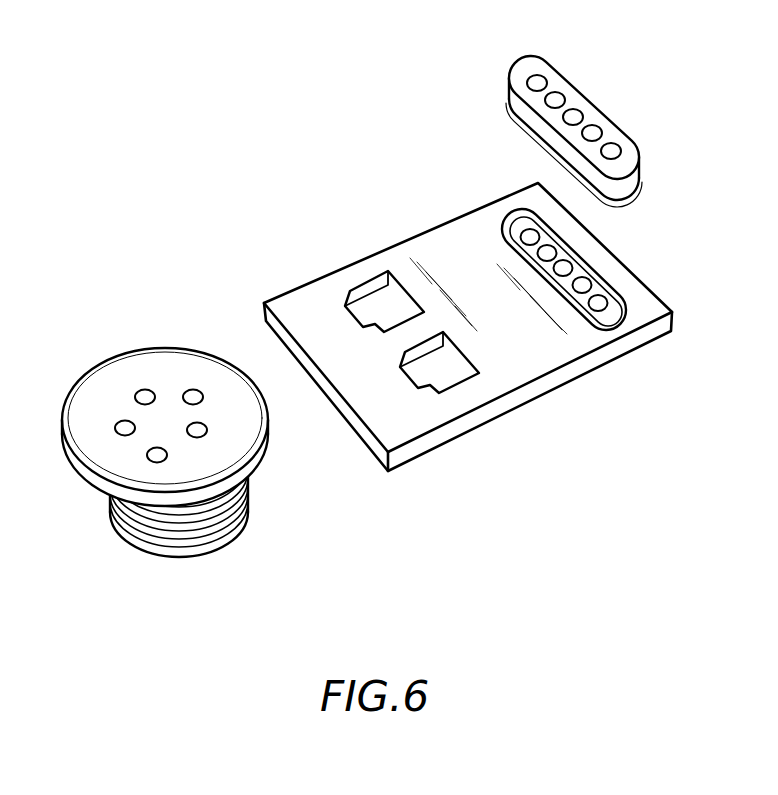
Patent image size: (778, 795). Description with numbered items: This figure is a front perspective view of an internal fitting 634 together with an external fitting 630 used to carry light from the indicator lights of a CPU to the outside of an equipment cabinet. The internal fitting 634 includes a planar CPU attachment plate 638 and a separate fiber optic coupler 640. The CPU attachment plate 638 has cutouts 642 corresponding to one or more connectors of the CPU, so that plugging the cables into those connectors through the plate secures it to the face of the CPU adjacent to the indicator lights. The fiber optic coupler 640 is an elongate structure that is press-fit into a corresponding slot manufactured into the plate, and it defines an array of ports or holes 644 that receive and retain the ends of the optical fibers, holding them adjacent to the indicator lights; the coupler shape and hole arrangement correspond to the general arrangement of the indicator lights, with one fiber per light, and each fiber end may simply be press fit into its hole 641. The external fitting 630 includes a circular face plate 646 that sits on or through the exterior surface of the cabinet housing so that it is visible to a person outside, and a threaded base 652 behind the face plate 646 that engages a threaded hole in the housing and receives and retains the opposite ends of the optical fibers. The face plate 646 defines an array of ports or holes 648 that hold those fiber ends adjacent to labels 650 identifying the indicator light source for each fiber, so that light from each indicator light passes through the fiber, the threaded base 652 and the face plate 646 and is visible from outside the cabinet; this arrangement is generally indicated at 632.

The external fitting 630 is at (95, 522).
The mounting plate assembly 632 is at (352, 467).
The internal fitting 634 is at (530, 405).
The CPU attachment plate 638 is at (644, 283).
The fiber optic coupler 640 is at (512, 95).
The slot hole 641 is at (603, 288).
The cutouts 642 is at (385, 300).
The ports or holes 644 is at (541, 79).
The face plate 646 is at (108, 387).
The ports or holes 648 is at (157, 440).
The labels 650 is at (147, 342).
The threaded base 652 is at (207, 525).